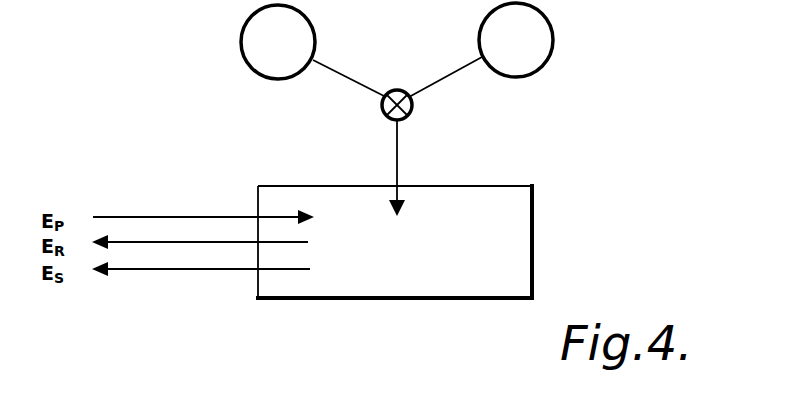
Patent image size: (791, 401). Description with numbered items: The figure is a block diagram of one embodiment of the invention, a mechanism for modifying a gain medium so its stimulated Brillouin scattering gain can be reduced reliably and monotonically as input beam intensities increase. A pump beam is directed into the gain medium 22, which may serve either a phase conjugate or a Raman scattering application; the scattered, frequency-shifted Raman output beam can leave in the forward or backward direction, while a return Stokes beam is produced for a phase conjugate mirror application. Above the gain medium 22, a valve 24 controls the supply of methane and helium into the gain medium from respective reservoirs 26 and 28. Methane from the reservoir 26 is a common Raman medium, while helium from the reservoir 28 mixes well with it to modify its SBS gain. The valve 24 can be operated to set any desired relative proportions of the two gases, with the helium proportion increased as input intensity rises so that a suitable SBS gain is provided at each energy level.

The gain medium 22 is at (439, 281).
The valve 24 is at (398, 90).
The CH4 reservoir 26 is at (242, 44).
The He reservoir 28 is at (552, 28).